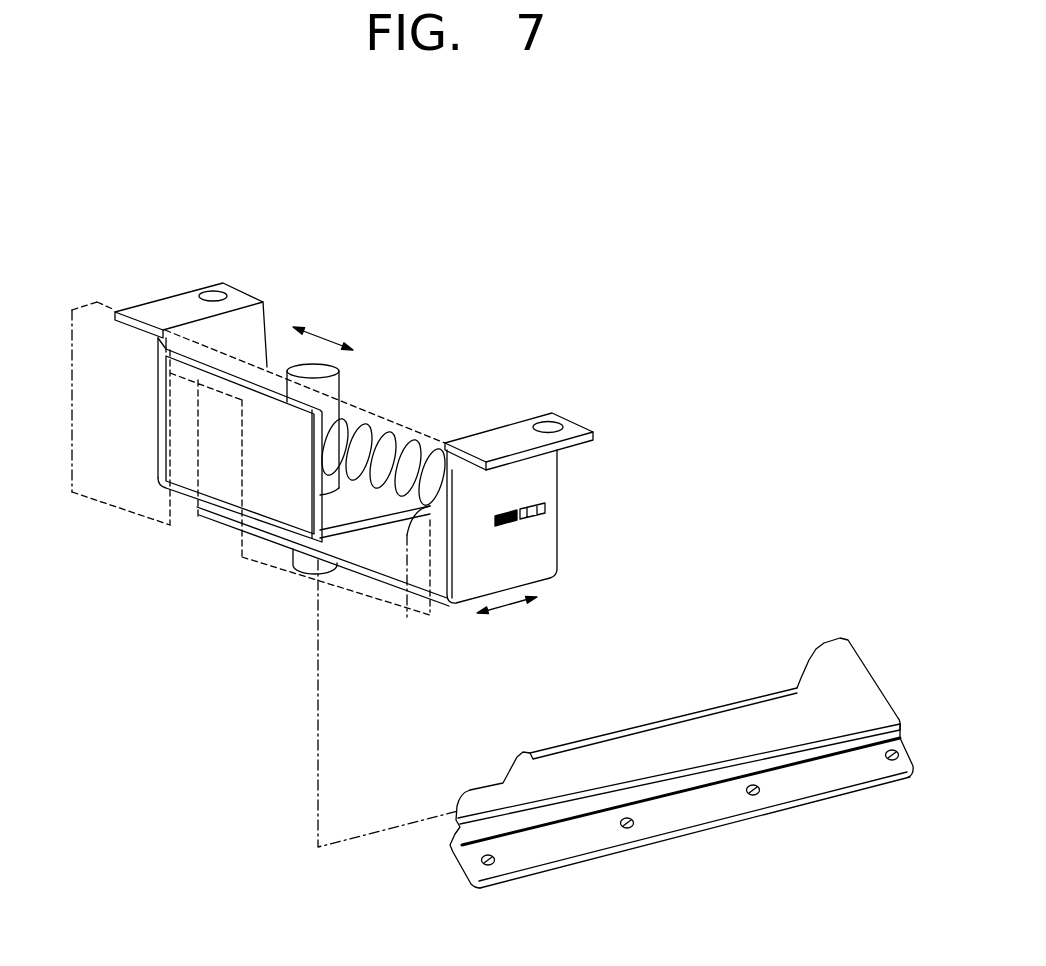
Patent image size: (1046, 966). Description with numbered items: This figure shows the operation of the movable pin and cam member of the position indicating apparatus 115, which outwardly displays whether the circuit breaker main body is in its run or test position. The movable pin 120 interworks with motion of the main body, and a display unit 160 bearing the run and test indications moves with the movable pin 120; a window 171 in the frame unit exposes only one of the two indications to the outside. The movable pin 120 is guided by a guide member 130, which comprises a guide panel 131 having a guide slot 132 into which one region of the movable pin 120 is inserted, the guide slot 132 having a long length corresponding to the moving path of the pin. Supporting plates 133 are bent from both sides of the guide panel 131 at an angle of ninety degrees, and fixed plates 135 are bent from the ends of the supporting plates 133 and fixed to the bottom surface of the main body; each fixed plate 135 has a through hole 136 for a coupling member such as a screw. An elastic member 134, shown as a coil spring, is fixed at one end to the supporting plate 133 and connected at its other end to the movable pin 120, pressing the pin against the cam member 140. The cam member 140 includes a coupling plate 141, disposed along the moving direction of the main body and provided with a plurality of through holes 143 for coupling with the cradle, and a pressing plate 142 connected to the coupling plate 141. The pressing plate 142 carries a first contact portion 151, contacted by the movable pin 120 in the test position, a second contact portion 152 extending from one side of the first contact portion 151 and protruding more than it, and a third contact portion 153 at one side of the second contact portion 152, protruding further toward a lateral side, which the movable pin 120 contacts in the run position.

The position indicating apparatus 115 is at (714, 262).
The movable pin 120 is at (330, 390).
The guide member 130 is at (476, 346).
The guide panel 131 is at (323, 565).
The guide slot 132 is at (403, 573).
The supporting plate 133 is at (552, 547).
The elastic member 134 is at (402, 437).
The fixed plate 135 is at (158, 305).
The through hole 136 is at (208, 290).
The cam member 140 is at (774, 590).
The coupling plate 141 is at (684, 818).
The pressing plate 142 is at (536, 800).
The through hole 143 is at (753, 793).
The first contact portion 151 is at (483, 785).
The second contact portion 152 is at (637, 727).
The third contact portion 153 is at (843, 650).
The display unit 160 is at (253, 497).
The window 171 is at (240, 547).